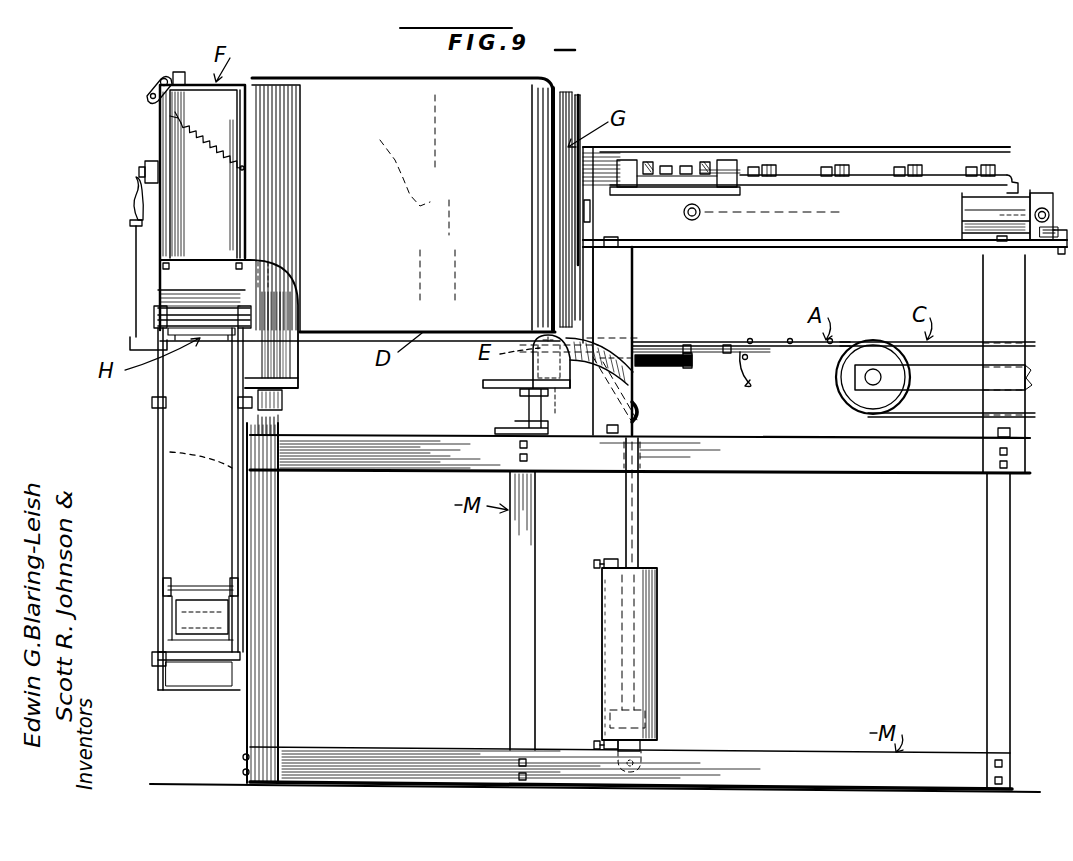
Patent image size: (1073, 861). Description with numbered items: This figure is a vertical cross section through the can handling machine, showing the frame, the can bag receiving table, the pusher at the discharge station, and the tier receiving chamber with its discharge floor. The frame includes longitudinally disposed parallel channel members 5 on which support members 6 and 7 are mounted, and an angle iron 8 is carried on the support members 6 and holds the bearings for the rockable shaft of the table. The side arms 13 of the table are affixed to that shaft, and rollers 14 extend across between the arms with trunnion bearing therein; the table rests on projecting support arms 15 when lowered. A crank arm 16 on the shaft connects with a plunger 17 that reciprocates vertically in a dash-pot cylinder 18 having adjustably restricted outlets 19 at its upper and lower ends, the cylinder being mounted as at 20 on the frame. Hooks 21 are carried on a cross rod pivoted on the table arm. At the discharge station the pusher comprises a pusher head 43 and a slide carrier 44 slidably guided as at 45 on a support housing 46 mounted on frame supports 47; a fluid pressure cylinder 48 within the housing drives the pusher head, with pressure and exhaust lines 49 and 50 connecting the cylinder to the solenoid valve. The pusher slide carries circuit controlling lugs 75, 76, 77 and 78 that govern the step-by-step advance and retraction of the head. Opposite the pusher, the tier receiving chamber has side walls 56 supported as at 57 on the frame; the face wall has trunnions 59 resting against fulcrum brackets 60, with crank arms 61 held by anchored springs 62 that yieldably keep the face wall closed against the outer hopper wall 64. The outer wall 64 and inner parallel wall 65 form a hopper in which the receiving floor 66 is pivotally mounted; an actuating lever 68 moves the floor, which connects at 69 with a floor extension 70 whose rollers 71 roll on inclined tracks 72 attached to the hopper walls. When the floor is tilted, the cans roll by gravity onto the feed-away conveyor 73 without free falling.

The channel member 5 is at (282, 418).
The support member 6 is at (490, 384).
The support member 7 is at (284, 395).
The angle iron 8 is at (550, 392).
The side arm 13 is at (705, 343).
The roller 14 is at (760, 341).
The support arm 15 is at (666, 368).
The crank arm 16 is at (642, 414).
The plunger 17 is at (640, 533).
The dash-pot cylinder 18 is at (658, 646).
The restricted outlet 19 is at (595, 578).
The cylinder mounting 20 is at (640, 762).
The hook 21 is at (746, 388).
The pusher head 43 is at (580, 97).
The slide carrier 44 is at (872, 176).
The slide guide 45 is at (942, 188).
The support housing 46 is at (747, 232).
The frame support 47 is at (616, 310).
The fluid pressure cylinder 48 is at (975, 217).
The pressure and exhaust line 49 is at (682, 214).
The pressure and exhaust line 50 is at (1040, 208).
The side wall 56 is at (255, 92).
The side wall support 57 is at (302, 282).
The trunnion 59 is at (166, 77).
The fulcrum bracket 60 is at (182, 72).
The crank arm 61 is at (153, 92).
The anchored spring 62 is at (178, 118).
The outer hopper wall 64 is at (156, 397).
The inner hopper wall 65 is at (233, 402).
The receiving floor 66 is at (224, 337).
The actuating lever 68 is at (135, 262).
The floor connection 69 is at (150, 330).
The floor extension 70 is at (170, 460).
The roller 71 is at (163, 585).
The inclined track 72 is at (162, 614).
The feed-away conveyor 73 is at (208, 624).
The circuit controlling lug 75 is at (770, 165).
The circuit controlling lug 76 is at (841, 165).
The circuit controlling lug 77 is at (915, 165).
The circuit controlling lug 78 is at (1005, 157).